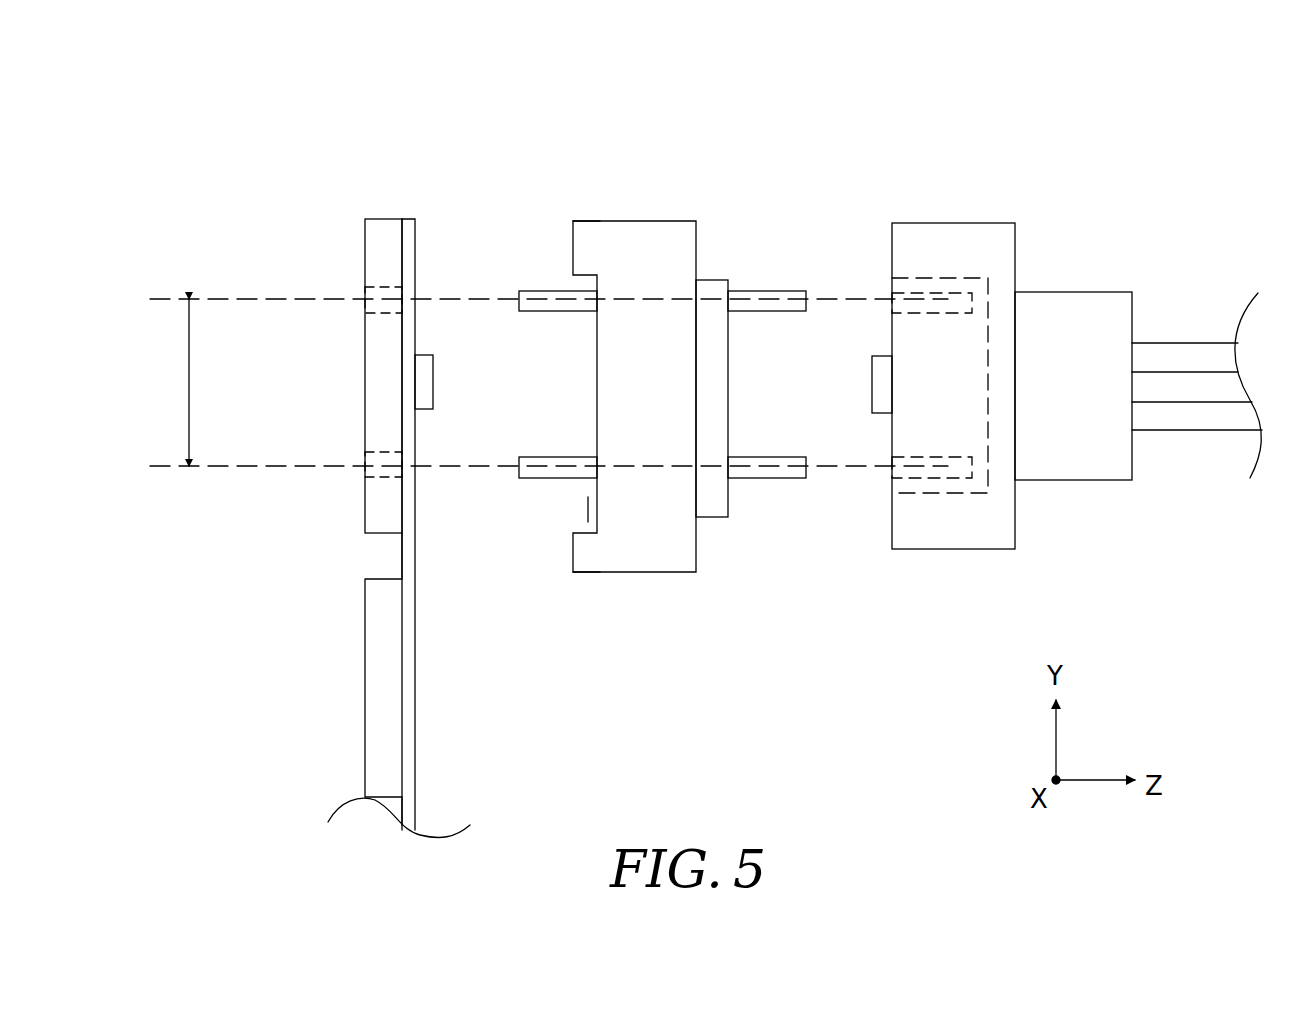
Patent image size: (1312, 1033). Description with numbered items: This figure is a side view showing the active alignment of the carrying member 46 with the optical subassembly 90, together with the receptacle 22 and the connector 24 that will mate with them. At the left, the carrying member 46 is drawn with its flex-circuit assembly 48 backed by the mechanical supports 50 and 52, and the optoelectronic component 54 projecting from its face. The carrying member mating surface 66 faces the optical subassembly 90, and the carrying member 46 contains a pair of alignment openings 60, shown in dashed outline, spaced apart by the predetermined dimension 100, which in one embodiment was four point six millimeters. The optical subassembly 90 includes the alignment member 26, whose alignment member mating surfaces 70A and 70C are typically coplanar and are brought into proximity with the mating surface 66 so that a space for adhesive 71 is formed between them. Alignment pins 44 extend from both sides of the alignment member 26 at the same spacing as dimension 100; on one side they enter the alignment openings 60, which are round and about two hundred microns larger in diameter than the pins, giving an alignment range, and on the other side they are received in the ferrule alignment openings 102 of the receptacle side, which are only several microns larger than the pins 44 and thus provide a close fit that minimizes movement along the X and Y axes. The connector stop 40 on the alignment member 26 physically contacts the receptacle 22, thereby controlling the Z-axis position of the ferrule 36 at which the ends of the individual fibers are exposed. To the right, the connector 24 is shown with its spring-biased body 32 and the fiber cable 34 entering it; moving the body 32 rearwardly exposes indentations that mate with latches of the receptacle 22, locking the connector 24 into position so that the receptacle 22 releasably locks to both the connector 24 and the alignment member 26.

The receptacle 22 is at (953, 550).
The connector 24 is at (1057, 366).
The alignment member 26 is at (650, 668).
The spring-biased body 32 is at (1073, 480).
The fiber cable 34 is at (1181, 343).
The ferrule 36 is at (908, 278).
The connector stop 40 is at (730, 498).
The alignment pins 44 is at (555, 291).
The carrying member 46 is at (400, 433).
The flex-circuit assembly 48 is at (417, 683).
The mechanical support 50 is at (365, 502).
The mechanical support 52 is at (388, 695).
The optoelectronic component 54 is at (433, 383).
The alignment openings 60 is at (365, 290).
The carrying member mating surface 66 is at (415, 245).
The alignment member mating surface 70A is at (573, 558).
The alignment member mating surface 70C is at (573, 230).
The space for adhesive 71 is at (584, 508).
The optical subassembly 90 is at (646, 371).
The dimension 100 is at (189, 298).
The ferrule alignment openings 102 is at (928, 292).